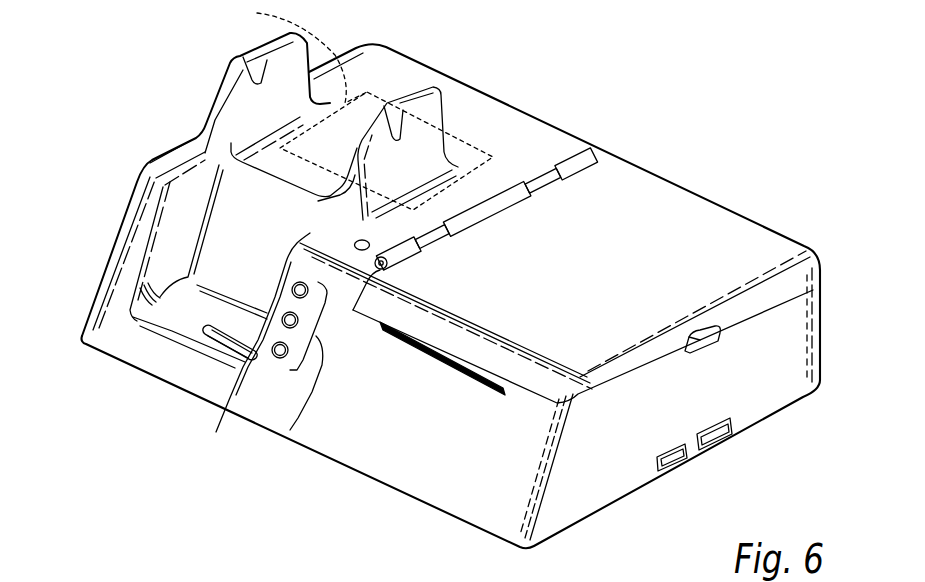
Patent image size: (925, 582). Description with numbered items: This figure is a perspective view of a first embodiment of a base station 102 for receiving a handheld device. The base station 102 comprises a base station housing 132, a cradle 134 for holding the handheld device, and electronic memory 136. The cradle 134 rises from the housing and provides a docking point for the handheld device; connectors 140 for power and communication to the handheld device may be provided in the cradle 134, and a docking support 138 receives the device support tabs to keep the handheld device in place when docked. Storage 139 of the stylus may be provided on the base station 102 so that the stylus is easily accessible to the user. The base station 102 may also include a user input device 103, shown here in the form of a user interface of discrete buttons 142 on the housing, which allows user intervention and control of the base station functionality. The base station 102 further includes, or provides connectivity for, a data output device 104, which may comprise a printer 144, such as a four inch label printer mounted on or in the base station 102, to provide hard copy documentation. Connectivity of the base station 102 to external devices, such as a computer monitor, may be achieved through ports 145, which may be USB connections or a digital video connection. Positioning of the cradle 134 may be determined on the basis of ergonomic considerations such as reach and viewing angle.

The base station 102 is at (528, 140).
The user input device 103 is at (318, 365).
The data output device 104 is at (642, 217).
The base station housing 132 is at (464, 478).
The cradle 134 is at (232, 220).
The electronic memory 136 is at (349, 107).
The docking support 138 is at (390, 105).
The storage of the stylus 139 is at (370, 241).
The connectors 140 is at (206, 336).
The buttons 142 is at (292, 291).
The printer 144 is at (705, 245).
The ports 145 is at (716, 450).